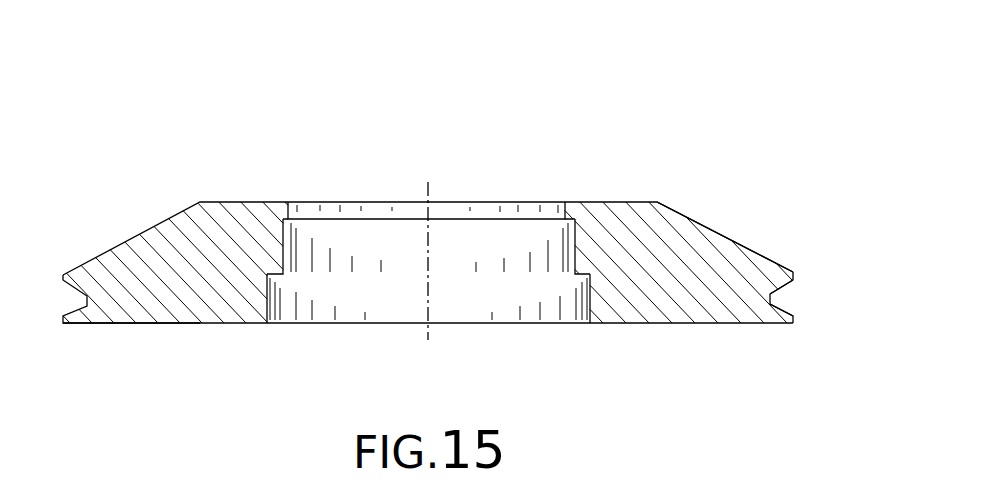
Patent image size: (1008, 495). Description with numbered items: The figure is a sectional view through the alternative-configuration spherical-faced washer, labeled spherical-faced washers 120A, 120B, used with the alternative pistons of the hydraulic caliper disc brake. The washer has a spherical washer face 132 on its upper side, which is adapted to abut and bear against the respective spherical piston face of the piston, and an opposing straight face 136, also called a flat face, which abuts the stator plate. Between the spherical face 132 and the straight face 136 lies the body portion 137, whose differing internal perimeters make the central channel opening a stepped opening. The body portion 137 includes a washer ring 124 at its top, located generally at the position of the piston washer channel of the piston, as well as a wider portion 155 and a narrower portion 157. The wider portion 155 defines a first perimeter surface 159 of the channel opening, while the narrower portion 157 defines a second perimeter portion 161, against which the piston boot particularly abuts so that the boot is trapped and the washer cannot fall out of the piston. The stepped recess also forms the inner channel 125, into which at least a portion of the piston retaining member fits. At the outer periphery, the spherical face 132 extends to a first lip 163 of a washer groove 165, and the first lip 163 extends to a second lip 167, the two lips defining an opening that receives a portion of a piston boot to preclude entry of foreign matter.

The spherical-faced washer 120A is at (420, 165).
The spherical-faced washer 120B is at (365, 38).
The washer ring 124 is at (286, 206).
The inner channel 125 is at (582, 293).
The spherical washer face 132 is at (697, 218).
The straight face 136 is at (642, 323).
The body portion 137 is at (728, 262).
The wider portion 155 is at (160, 283).
The narrower portion 157 is at (185, 238).
The first perimeter surface 159 is at (265, 298).
The second perimeter portion 161 is at (573, 252).
The first lip 163 is at (790, 277).
The washer groove 165 is at (792, 297).
The second lip 167 is at (788, 323).